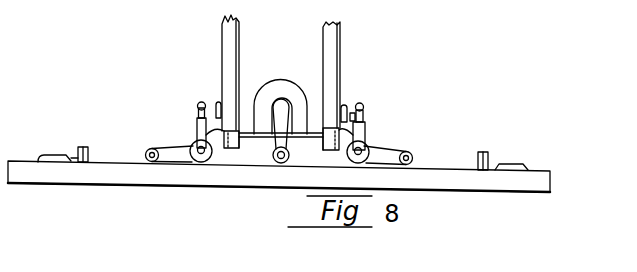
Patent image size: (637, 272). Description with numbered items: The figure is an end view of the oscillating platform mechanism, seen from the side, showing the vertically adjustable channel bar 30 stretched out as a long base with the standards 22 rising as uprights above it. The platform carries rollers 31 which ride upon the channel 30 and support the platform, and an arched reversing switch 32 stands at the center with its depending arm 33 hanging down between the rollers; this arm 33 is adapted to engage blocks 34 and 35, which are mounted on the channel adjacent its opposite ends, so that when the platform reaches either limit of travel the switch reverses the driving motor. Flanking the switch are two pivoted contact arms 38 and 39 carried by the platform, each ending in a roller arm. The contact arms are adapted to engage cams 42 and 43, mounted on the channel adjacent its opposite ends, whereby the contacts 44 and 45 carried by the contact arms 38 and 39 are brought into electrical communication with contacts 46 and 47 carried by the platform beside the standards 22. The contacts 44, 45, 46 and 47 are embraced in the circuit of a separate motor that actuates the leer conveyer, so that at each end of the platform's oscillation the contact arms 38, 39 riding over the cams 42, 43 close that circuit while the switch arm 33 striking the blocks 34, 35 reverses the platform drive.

The standards 22 is at (332, 43).
The channel bar 30 is at (542, 182).
The rollers 31 is at (370, 145).
The reversing switch 32 is at (285, 90).
The arm 33 is at (278, 123).
The block 34 is at (83, 153).
The block 35 is at (480, 154).
The contact arm 38 is at (197, 125).
The contact arm 39 is at (362, 130).
The cam 42 is at (63, 158).
The cam 43 is at (512, 163).
The contact 44 is at (196, 110).
The contact 45 is at (365, 117).
The contact 46 is at (220, 108).
The contact 47 is at (342, 116).